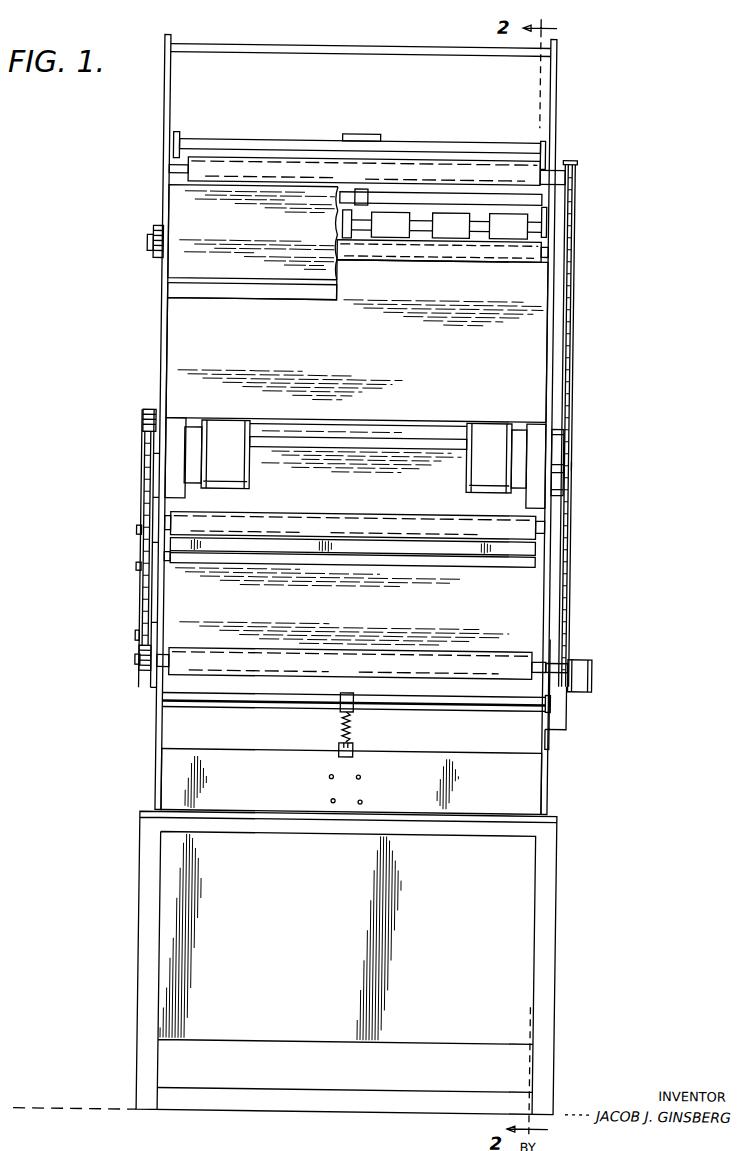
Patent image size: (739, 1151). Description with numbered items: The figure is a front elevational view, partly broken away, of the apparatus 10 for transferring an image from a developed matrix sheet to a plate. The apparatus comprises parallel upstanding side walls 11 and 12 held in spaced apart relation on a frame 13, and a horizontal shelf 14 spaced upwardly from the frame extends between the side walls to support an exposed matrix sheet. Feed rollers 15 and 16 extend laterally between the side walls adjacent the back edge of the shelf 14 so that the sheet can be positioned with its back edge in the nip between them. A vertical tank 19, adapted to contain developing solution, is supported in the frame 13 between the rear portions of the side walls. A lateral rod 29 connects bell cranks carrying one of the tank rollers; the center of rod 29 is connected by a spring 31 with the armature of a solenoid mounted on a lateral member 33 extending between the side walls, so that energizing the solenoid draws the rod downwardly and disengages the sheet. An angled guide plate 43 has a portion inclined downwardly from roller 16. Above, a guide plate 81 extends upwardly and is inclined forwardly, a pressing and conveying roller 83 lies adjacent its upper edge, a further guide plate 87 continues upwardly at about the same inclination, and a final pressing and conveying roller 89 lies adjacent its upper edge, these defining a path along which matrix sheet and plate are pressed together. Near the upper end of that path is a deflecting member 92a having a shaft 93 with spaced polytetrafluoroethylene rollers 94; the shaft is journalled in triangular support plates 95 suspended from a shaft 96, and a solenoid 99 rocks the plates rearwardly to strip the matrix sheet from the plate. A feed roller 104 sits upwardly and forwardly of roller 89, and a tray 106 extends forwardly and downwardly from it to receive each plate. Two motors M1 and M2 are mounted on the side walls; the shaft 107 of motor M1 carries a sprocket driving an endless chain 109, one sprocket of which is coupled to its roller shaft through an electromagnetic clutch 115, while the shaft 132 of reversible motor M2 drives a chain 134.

The apparatus 10 is at (638, 163).
The side wall 11 is at (549, 325).
The side wall 12 is at (160, 373).
The frame 13 is at (553, 969).
The horizontal shelf 14 is at (425, 565).
The feed roller 15 is at (441, 521).
The feed roller 16 is at (315, 562).
The vertical tank 19 is at (450, 1037).
The lateral rod 29 is at (450, 704).
The spring 31 is at (357, 735).
The lateral member 33 is at (297, 759).
The angled guide plate 43 is at (520, 614).
The guide plate 81 is at (352, 498).
The pressing and conveying roller 83 is at (398, 443).
The guide plate 87 is at (375, 369).
The pressing and conveying roller 89 is at (446, 243).
The deflecting member 92a is at (355, 235).
The shaft 93 is at (414, 222).
The rollers 94 is at (493, 232).
The triangular support plates 95 is at (172, 135).
The shaft 96 is at (446, 151).
The solenoid 99 is at (369, 138).
The feed roller 104 is at (278, 166).
The tray 106 is at (180, 211).
The shaft of motor M1 107 is at (566, 464).
The endless chain 109 is at (569, 282).
The electromagnetic clutch 115 is at (594, 667).
The shaft of motor M2 132 is at (139, 465).
The chain 134 is at (139, 612).
The motor M1 is at (506, 465).
The motor M2 is at (207, 458).